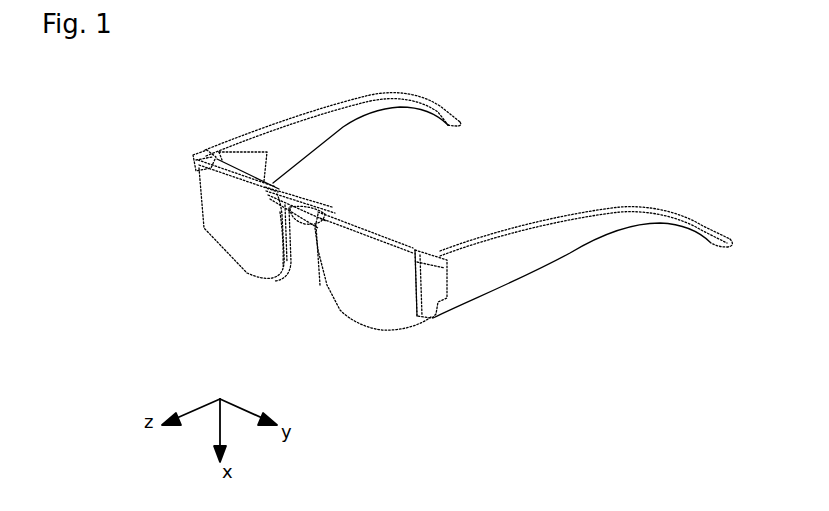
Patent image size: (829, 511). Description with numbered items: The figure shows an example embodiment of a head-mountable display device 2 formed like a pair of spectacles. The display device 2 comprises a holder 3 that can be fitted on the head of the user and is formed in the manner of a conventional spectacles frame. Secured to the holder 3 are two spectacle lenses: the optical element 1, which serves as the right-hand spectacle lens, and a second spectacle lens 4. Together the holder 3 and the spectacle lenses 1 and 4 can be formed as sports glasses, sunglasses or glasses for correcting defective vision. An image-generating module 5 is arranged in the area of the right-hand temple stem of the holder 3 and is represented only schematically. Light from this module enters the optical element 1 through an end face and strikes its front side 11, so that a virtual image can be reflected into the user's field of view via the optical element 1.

The optical element 1 is at (220, 241).
The front side 11 is at (225, 240).
The display device 2 is at (266, 322).
The holder 3 is at (355, 102).
The second spectacle lens 4 is at (355, 320).
The image-generating module 5 is at (249, 153).